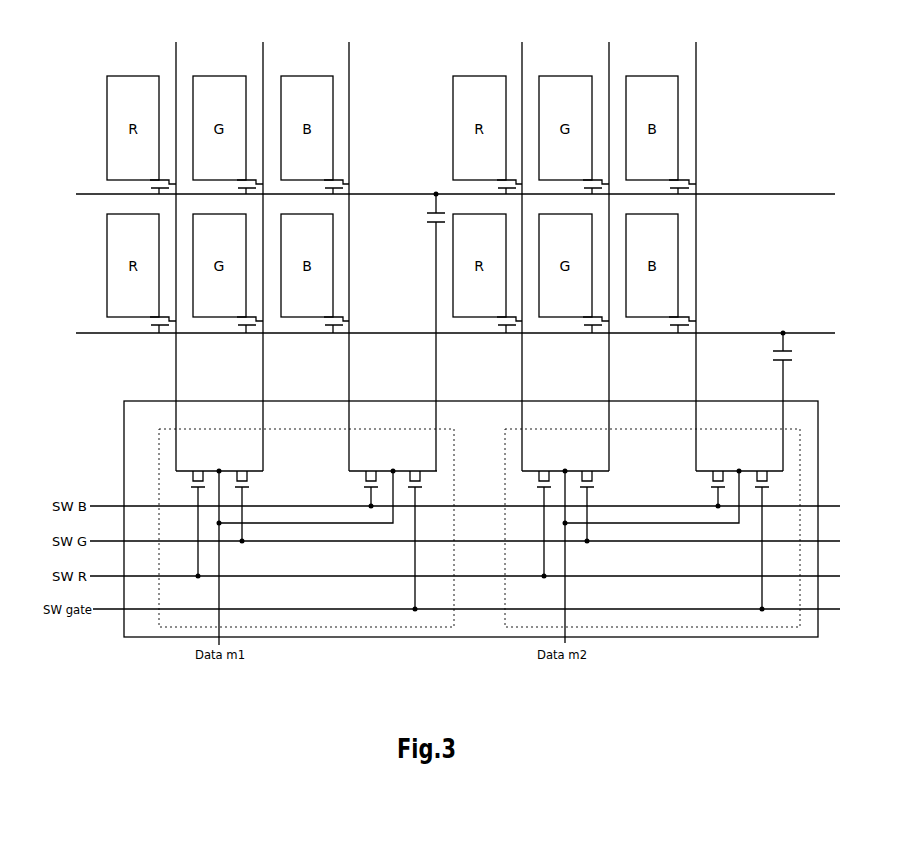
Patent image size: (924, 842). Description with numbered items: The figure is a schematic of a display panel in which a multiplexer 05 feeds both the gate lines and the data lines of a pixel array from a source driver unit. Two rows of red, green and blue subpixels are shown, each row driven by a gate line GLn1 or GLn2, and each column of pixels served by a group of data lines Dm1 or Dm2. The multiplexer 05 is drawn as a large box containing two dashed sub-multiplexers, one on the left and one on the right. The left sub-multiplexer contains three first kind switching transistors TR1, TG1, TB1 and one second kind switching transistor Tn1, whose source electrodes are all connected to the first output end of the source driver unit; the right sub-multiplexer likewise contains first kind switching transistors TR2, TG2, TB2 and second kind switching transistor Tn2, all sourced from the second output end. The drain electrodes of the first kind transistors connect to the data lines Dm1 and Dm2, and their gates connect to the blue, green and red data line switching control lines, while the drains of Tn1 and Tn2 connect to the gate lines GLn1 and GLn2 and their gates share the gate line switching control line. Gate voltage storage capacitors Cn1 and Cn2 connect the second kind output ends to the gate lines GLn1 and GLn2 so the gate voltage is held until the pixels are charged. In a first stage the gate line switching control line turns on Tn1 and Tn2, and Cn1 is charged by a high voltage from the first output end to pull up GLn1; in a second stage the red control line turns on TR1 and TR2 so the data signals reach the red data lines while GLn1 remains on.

The multiplexer 05 is at (471, 556).
The gate voltage storage capacitor Cn1 is at (426, 332).
The gate voltage storage capacitor Cn2 is at (770, 401).
The second kind switching transistor Tn1 is at (415, 532).
The second kind switching transistor Tn2 is at (761, 532).
The first kind switching transistor TR1 is at (195, 516).
The first kind switching transistor TG1 is at (238, 498).
The first kind switching transistor TB1 is at (367, 481).
The first kind switching transistor TR2 is at (540, 516).
The first kind switching transistor TG2 is at (583, 498).
The first kind switching transistor TB2 is at (714, 481).
The gate line GLn1 is at (436, 194).
The gate line GLn2 is at (436, 333).
The data lines Dm1 is at (257, 248).
The data lines Dm2 is at (599, 248).